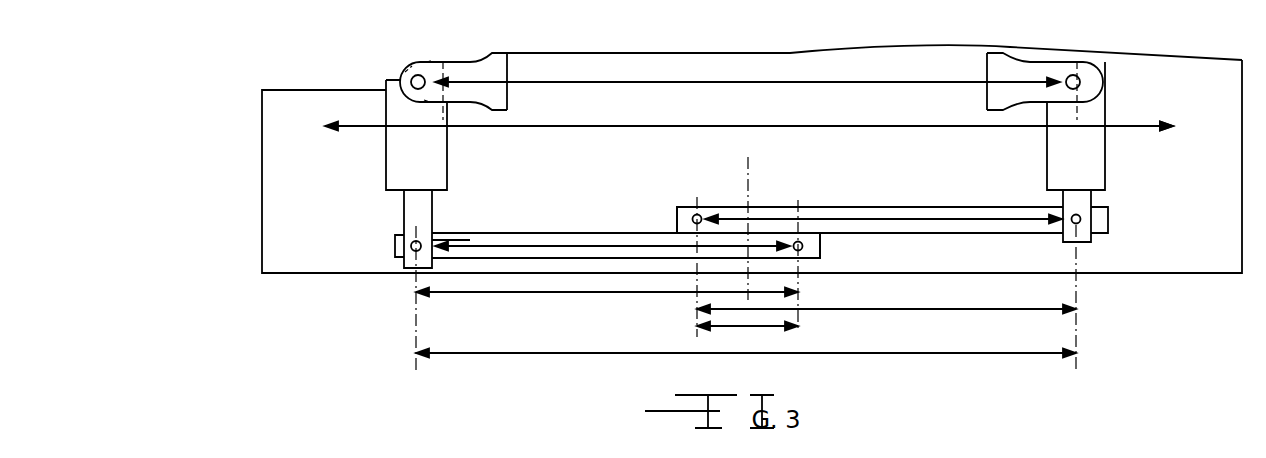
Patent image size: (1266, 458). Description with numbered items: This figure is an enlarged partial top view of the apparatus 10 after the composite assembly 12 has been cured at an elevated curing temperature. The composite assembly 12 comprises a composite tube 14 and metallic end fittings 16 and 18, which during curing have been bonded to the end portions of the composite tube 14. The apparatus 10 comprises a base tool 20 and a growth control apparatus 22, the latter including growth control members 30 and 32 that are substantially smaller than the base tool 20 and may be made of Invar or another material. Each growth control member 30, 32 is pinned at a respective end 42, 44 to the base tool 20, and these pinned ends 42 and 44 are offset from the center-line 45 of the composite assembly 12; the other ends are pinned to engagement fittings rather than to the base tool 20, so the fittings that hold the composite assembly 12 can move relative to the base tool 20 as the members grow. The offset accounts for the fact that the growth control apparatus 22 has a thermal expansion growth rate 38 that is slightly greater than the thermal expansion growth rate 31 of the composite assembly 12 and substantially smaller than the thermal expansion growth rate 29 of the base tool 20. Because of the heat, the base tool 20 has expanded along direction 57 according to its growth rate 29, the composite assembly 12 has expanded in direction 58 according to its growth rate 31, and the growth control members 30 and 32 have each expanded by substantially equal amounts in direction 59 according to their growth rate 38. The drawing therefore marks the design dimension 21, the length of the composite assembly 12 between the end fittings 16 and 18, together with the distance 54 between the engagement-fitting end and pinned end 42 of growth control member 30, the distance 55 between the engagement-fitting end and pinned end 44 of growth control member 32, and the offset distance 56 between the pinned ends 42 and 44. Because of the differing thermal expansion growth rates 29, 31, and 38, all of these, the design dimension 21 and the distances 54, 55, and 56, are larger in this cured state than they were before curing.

The apparatus 10 is at (262, 302).
The composite assembly 12 is at (488, 72).
The composite tube 14 is at (782, 67).
The end fitting 16 is at (457, 72).
The end fitting 18 is at (993, 63).
The base tool 20 is at (322, 258).
The design dimension 21 is at (625, 355).
The growth control apparatus 22 is at (643, 236).
The thermal expansion growth rate 29 is at (687, 127).
The growth control member 30 is at (510, 243).
The thermal expansion growth rate 31 is at (617, 80).
The growth control member 32 is at (858, 207).
The thermal expansion growth rate 38 is at (467, 243).
The pinned end 42 is at (802, 250).
The pinned end 44 is at (690, 214).
The center-line 45 is at (750, 195).
The distance 54 is at (552, 293).
The distance 55 is at (955, 310).
The distance 56 is at (752, 327).
The direction 57 is at (990, 128).
The direction 58 is at (545, 79).
The direction 59 is at (588, 246).